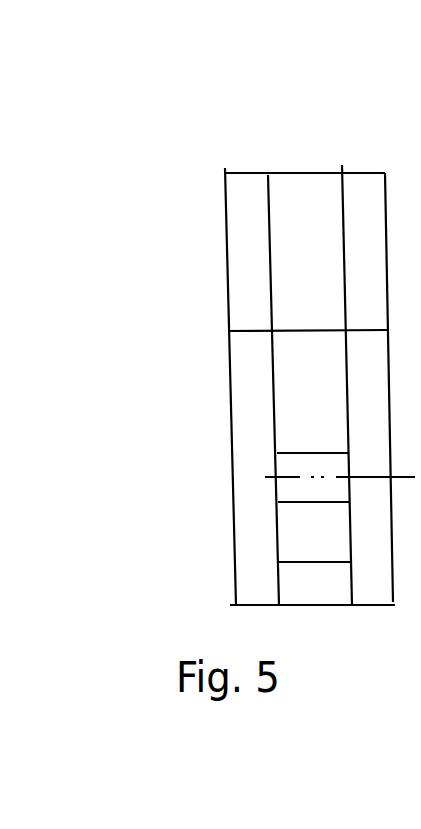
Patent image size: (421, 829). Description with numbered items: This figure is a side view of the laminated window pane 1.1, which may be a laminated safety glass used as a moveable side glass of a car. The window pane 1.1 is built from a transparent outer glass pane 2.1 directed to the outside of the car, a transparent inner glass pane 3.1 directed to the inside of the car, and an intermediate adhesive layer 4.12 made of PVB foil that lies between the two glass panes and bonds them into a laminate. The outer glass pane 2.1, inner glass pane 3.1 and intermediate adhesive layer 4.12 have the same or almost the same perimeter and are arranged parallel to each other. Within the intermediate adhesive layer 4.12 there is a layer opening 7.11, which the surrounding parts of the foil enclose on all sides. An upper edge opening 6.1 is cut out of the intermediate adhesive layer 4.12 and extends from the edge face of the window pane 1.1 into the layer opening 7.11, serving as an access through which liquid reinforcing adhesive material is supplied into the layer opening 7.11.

The window pane 1.1 is at (326, 140).
The outer glass pane 2.1 is at (240, 242).
The intermediate adhesive layer 4.12 is at (303, 277).
The upper edge opening 6.1 is at (282, 467).
The layer opening 7.11 is at (308, 539).
The inner glass pane 3.1 is at (368, 598).